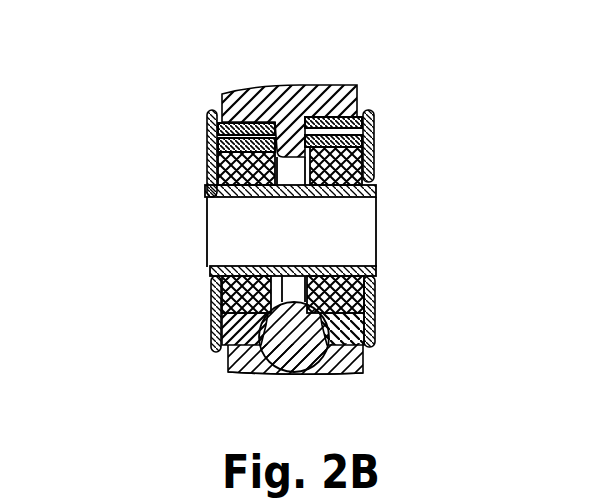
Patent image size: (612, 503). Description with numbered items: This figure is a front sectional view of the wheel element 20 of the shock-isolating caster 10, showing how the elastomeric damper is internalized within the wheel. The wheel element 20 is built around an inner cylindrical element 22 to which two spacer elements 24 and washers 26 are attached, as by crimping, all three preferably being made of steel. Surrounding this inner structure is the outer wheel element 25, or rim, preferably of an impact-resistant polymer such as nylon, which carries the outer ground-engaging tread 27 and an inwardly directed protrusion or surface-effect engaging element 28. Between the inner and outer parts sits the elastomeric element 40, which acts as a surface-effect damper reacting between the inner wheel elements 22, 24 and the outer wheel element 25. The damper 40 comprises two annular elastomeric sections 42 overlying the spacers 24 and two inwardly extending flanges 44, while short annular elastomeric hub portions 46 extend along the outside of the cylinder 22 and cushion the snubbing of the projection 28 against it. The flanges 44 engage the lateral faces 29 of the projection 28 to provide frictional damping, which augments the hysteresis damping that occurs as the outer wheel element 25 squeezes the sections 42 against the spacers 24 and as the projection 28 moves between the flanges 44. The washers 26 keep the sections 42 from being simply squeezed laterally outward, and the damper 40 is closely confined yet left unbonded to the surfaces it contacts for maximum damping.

The shock-isolating caster 10 is at (170, 316).
The wheel element 20 is at (392, 192).
The inner cylindrical element 22 is at (377, 270).
The spacer elements 24 is at (328, 196).
The outer wheel element 25 is at (333, 82).
The washers 26 is at (203, 167).
The ground-engaging tread 27 is at (262, 85).
The surface-effect engaging element 28 is at (336, 128).
The lateral faces 29 is at (206, 132).
The elastomeric element 40 is at (220, 360).
The annular elastomeric sections 42 is at (310, 373).
The inwardly extending flanges 44 is at (333, 268).
The annular elastomeric hub portions 46 is at (301, 268).